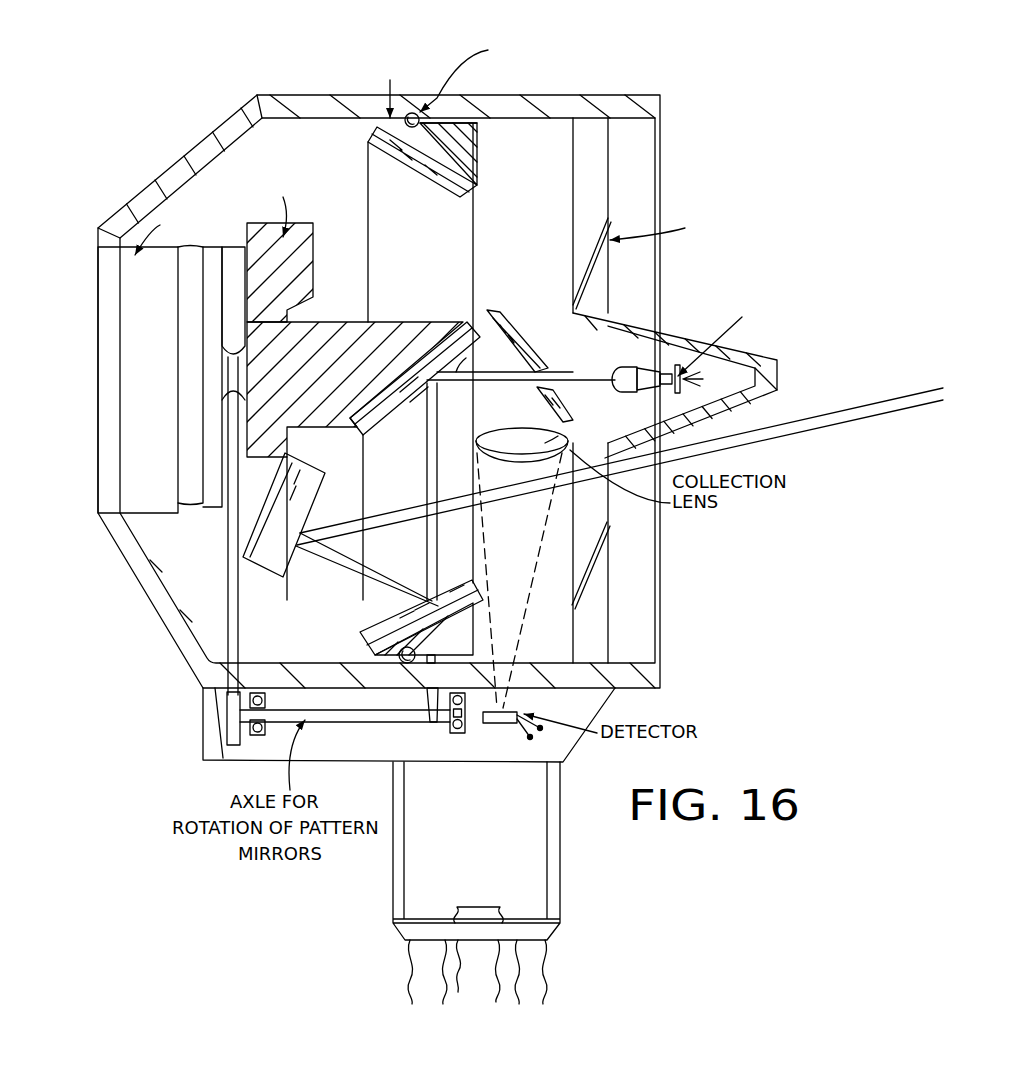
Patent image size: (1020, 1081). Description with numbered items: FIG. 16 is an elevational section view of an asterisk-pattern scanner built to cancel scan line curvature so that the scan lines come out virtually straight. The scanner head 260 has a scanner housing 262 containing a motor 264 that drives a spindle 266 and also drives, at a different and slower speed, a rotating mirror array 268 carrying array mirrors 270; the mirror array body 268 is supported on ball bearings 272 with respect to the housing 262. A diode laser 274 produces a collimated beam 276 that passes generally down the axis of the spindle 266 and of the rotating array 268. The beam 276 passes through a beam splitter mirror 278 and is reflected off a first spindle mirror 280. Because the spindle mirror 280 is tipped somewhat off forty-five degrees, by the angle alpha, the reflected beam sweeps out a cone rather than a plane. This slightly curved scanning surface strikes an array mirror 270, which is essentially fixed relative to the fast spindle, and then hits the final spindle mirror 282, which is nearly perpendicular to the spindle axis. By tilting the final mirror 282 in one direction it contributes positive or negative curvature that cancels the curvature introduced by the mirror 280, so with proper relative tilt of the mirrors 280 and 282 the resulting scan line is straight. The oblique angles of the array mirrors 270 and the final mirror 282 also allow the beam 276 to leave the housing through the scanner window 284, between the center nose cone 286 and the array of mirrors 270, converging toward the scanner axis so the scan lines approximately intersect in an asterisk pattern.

The scanner head 260 is at (440, 52).
The scanner housing 262 is at (533, 97).
The motor 264 is at (113, 463).
The spindle 266 is at (343, 318).
The mirror array 268 is at (478, 152).
The array mirrors 270 is at (460, 197).
The ball bearings 272 is at (458, 100).
The diode laser 274 is at (675, 378).
The beam 276 is at (558, 378).
The beam splitter mirror 278 is at (498, 305).
The first spindle mirror 280 is at (405, 405).
The final spindle mirror 282 is at (285, 562).
The scanner window 284 is at (610, 193).
The center nose cone 286 is at (745, 405).